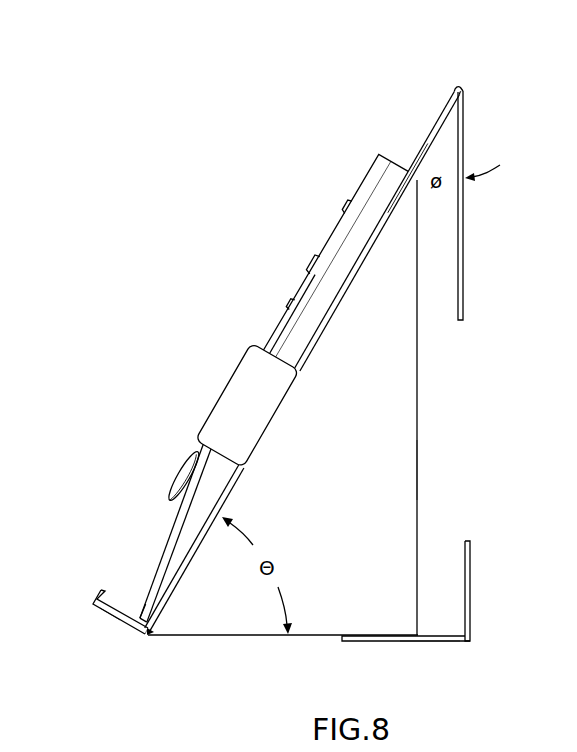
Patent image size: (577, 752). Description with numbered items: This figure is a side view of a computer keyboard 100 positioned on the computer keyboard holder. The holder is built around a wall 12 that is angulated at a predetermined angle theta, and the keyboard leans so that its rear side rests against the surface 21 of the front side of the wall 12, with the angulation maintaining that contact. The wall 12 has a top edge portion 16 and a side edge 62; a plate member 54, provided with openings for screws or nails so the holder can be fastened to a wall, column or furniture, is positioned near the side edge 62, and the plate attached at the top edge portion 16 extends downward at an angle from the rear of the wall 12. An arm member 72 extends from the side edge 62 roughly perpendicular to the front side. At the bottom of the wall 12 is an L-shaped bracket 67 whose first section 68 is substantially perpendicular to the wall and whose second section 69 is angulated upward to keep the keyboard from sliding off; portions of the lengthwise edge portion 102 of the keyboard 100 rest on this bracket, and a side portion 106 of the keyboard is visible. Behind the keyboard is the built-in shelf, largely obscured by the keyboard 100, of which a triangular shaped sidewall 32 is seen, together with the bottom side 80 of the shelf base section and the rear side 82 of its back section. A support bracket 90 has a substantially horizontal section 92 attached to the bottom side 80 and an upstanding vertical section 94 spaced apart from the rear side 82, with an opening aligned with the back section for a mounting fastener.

The wall 12 is at (447, 101).
The top edge portion 16 is at (462, 86).
The surface 21 is at (430, 137).
The plate member 54 is at (466, 233).
The side portion 106 is at (336, 257).
The side edge 62 is at (314, 343).
The arm member 72 is at (276, 421).
The computer keyboard 100 is at (173, 520).
The lengthwise edge portion 102 is at (143, 620).
The triangular shaped sidewall 32 is at (420, 396).
The rear side 82 is at (420, 467).
The bottom side 80 is at (220, 637).
The second section 69 is at (93, 592).
The first section 68 is at (103, 613).
The bracket 67 is at (133, 627).
The support bracket 90 is at (470, 563).
The upstanding vertical section 94 is at (470, 617).
The substantially horizontal section 92 is at (438, 641).